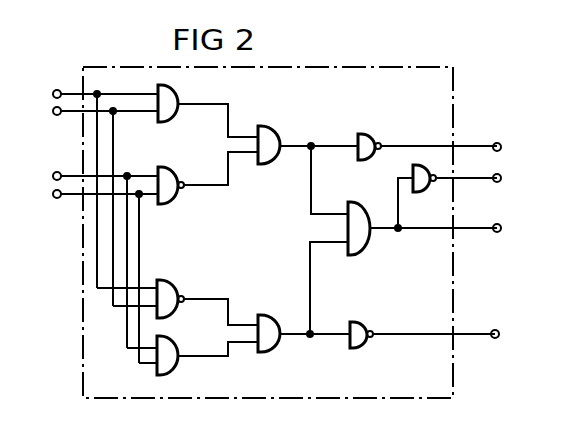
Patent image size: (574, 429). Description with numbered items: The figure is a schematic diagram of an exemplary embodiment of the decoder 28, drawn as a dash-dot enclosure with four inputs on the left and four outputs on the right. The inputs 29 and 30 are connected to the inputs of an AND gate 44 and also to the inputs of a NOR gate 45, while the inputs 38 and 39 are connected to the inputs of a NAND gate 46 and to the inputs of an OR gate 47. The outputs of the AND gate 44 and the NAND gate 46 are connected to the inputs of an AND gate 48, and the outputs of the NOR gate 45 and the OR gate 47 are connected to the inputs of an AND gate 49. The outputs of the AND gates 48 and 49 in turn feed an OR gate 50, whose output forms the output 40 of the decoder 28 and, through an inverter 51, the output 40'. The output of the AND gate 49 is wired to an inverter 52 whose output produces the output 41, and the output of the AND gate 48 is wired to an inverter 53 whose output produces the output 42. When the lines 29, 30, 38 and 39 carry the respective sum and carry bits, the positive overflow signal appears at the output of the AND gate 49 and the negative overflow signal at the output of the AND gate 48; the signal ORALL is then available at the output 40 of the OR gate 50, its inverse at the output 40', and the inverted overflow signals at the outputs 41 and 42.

The decoder 28 is at (445, 90).
The input 29 is at (92, 182).
The input 30 is at (92, 201).
The input 38 is at (92, 252).
The input 39 is at (92, 271).
The output 40 is at (509, 230).
The output 40' is at (512, 178).
The output 41 is at (507, 335).
The output 42 is at (497, 132).
The AND gate 44 is at (171, 93).
The NOR gate 45 is at (172, 292).
The NAND gate 46 is at (171, 179).
The OR gate 47 is at (178, 340).
The AND gate 48 is at (273, 141).
The AND gate 49 is at (273, 342).
The OR gate 50 is at (365, 238).
The inverter 51 is at (426, 185).
The inverter 52 is at (362, 342).
The inverter 53 is at (370, 143).